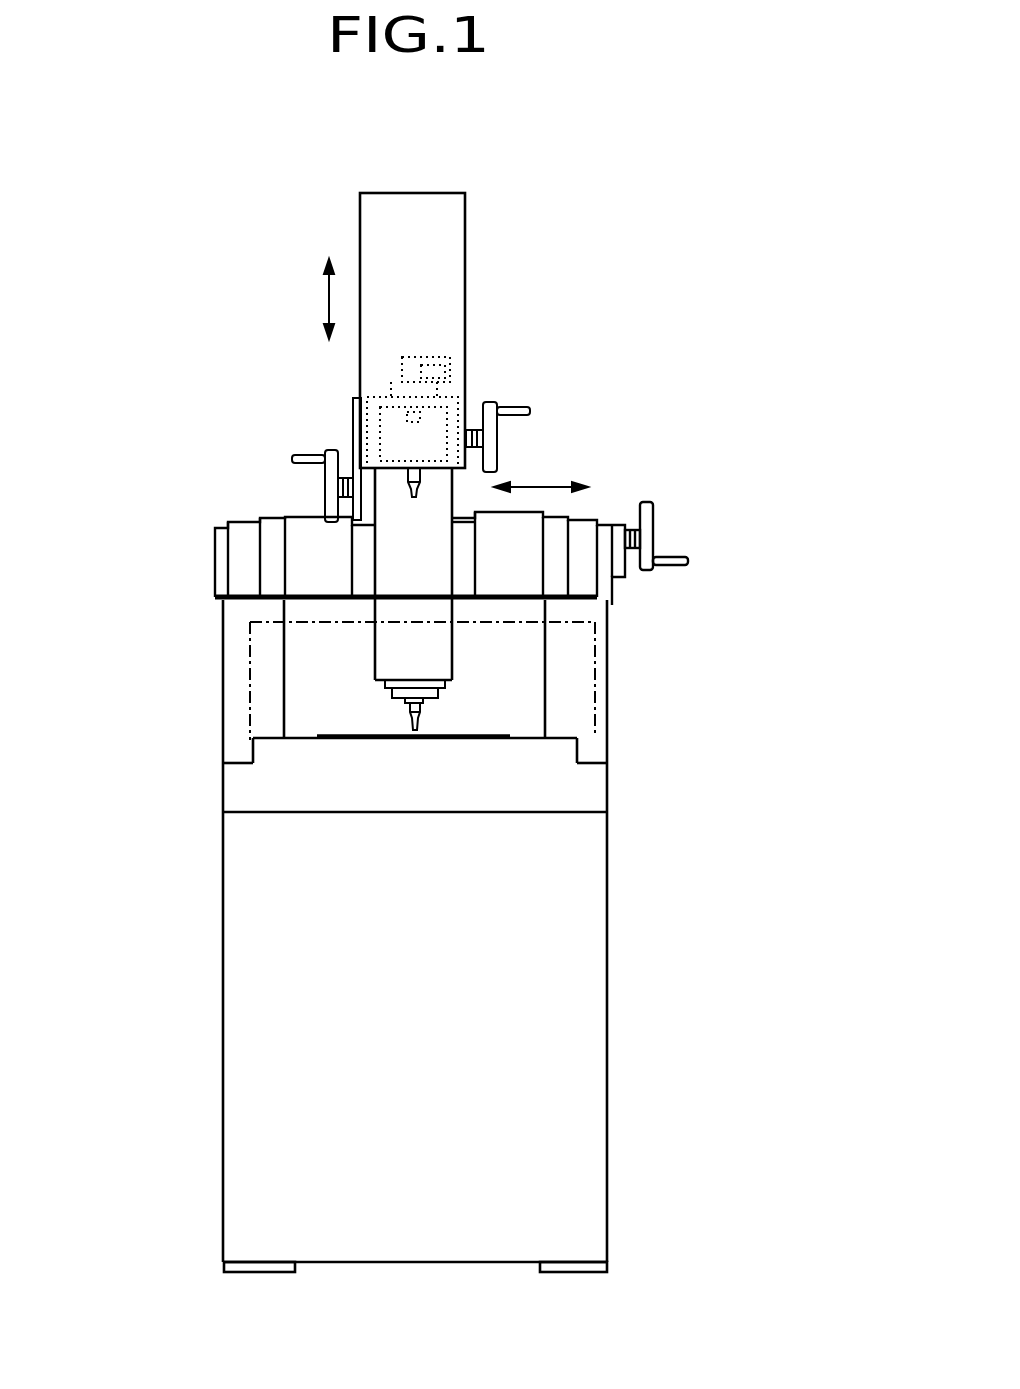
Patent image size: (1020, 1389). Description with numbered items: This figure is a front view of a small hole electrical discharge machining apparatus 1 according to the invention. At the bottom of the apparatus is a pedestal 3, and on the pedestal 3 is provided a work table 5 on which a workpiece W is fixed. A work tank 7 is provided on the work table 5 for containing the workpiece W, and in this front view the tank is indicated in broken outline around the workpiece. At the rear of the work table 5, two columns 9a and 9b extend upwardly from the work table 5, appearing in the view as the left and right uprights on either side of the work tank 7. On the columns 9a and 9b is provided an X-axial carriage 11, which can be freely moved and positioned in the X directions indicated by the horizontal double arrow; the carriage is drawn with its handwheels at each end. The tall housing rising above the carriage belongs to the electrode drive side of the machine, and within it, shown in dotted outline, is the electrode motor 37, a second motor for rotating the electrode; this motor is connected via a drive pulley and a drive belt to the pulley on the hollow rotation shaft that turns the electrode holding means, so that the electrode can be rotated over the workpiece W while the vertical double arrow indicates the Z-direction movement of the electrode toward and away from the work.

The small hole electrical discharge machining apparatus 1 is at (628, 326).
The pedestal 3 is at (607, 990).
The work table 5 is at (607, 791).
The work tank 7 is at (268, 678).
The column 9a is at (222, 746).
The column 9b is at (607, 692).
The X-axial carriage 11 is at (243, 524).
The electrode motor (second motor) 37 is at (466, 353).
The workpiece W is at (497, 735).